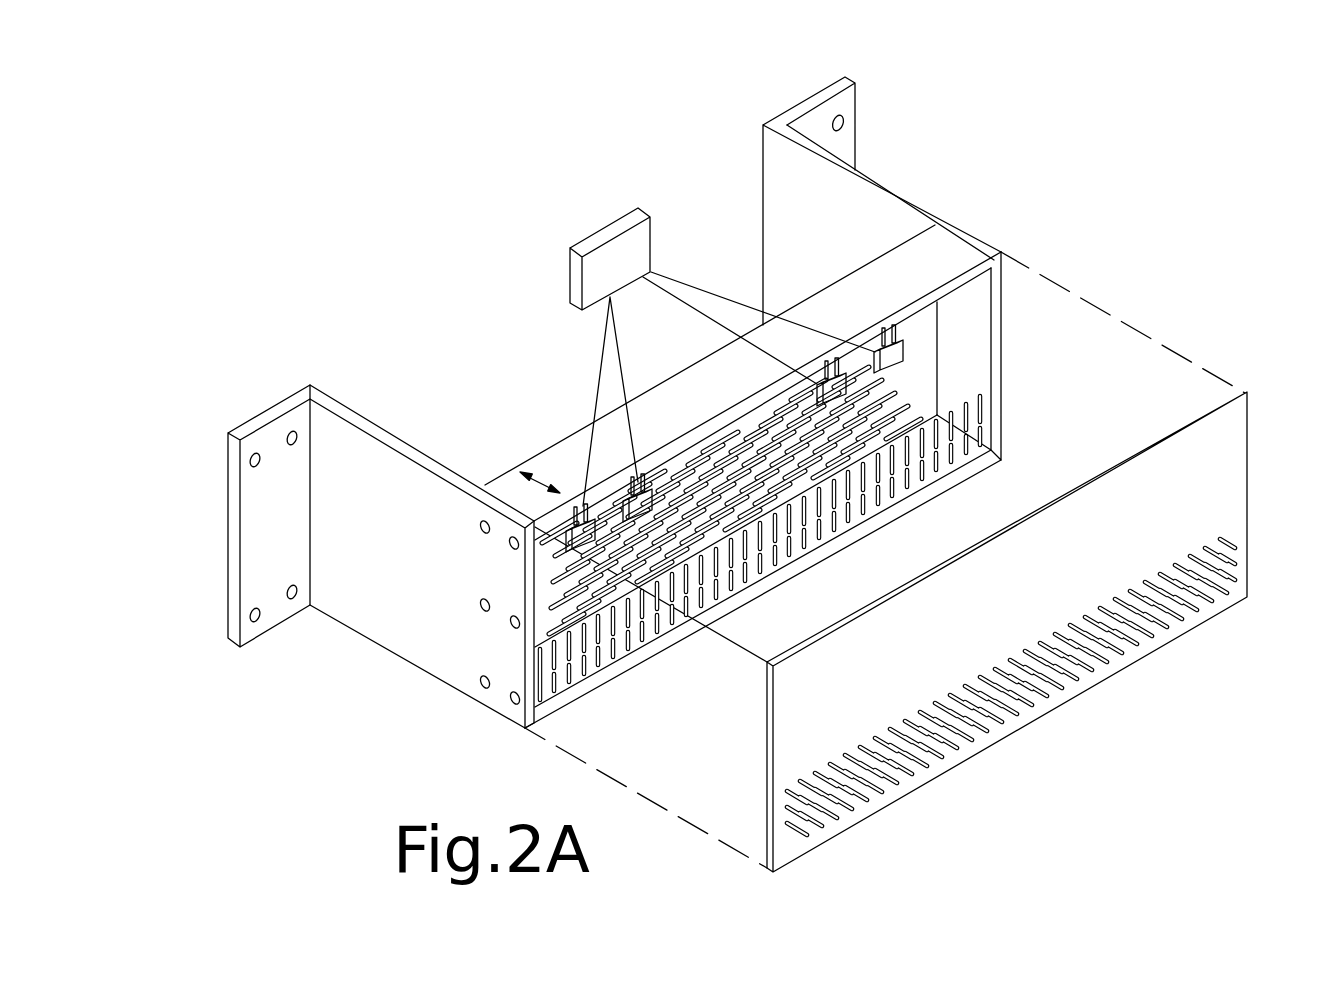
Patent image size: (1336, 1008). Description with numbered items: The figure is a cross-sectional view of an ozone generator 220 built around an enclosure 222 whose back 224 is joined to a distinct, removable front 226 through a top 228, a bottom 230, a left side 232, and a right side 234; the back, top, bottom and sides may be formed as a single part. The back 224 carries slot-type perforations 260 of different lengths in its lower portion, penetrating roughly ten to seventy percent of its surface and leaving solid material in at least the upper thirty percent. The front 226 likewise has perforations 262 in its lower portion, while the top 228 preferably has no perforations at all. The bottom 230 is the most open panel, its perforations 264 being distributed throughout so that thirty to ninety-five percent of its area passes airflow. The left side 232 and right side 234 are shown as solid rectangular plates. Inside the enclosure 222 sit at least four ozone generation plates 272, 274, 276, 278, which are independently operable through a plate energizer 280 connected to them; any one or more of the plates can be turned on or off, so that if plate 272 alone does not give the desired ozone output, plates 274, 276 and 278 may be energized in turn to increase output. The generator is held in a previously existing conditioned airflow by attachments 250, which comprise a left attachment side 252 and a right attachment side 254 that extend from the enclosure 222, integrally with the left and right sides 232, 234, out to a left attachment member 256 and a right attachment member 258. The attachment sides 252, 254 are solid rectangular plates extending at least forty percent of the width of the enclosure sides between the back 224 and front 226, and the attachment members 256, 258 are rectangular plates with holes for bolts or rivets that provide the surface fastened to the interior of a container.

The ozone generator 220 is at (969, 186).
The enclosure 222 is at (980, 219).
The back 224 is at (738, 430).
The front 226 is at (1027, 590).
The top 228 is at (845, 305).
The bottom 230 is at (615, 612).
The left side 232 is at (532, 606).
The right side 234 is at (1115, 385).
The attachments 250 is at (908, 148).
The left attachment side 252 is at (360, 573).
The right attachment side 254 is at (793, 193).
The left attachment member 256 is at (257, 508).
The right attachment member 258 is at (843, 137).
The perforations 260 is at (543, 480).
The perforations 262 is at (1212, 615).
The perforations 264 is at (750, 543).
The ozone generation plate 272 is at (590, 542).
The ozone generation plate 274 is at (637, 507).
The ozone generation plate 276 is at (835, 387).
The ozone generation plate 278 is at (903, 343).
The plate energizer 280 is at (617, 255).